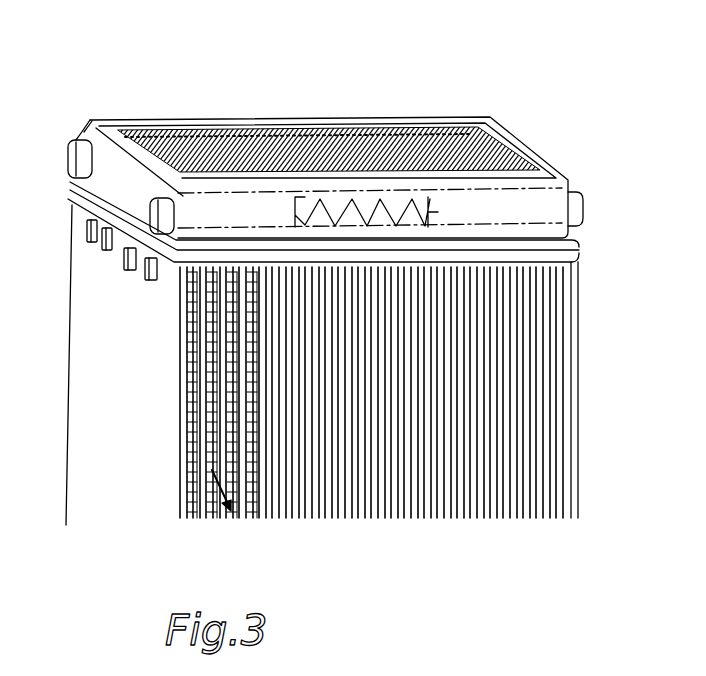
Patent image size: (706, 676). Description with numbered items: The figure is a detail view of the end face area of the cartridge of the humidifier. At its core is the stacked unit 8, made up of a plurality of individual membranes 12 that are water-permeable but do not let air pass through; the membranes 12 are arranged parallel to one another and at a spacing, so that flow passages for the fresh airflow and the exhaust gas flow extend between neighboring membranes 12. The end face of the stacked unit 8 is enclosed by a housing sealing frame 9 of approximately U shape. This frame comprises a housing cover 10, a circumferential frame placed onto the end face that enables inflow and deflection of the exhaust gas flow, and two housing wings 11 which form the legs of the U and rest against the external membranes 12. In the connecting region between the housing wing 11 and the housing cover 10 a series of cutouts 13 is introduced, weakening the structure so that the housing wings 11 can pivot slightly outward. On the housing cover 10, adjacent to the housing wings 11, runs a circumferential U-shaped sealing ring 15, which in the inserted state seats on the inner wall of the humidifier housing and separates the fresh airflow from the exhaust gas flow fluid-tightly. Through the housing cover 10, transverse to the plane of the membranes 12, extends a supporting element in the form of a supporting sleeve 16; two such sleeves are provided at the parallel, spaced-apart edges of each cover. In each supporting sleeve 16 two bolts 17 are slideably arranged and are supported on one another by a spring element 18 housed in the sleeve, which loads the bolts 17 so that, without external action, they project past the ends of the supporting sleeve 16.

The stacked unit 8 is at (375, 420).
The housing sealing frame 9 is at (492, 116).
The housing cover 10 is at (95, 128).
The housing wings 11 is at (85, 344).
The membranes 12 is at (357, 518).
The cutouts 13 is at (132, 266).
The sealing ring 15 is at (570, 240).
The supporting sleeve 16 is at (553, 186).
The bolts 17 is at (585, 208).
The spring element 18 is at (364, 206).